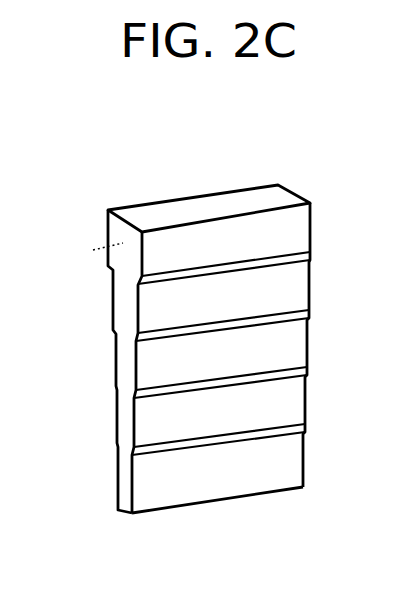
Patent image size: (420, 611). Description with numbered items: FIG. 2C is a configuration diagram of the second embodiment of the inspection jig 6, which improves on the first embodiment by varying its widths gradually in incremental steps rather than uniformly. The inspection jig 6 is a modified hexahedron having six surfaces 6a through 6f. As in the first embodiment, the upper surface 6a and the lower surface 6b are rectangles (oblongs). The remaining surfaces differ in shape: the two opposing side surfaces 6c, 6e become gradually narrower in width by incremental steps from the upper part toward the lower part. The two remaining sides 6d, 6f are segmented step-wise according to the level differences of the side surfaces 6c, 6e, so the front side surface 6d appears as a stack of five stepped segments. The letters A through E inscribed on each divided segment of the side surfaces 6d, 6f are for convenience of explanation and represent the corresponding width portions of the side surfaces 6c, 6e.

The inspection jig 6 is at (298, 160).
The upper surface 6a is at (206, 196).
The lower surface 6b is at (240, 497).
The side surface 6c is at (127, 366).
The side surface 6d is at (302, 293).
The side surface 6e is at (312, 218).
The side surface 6f is at (92, 250).